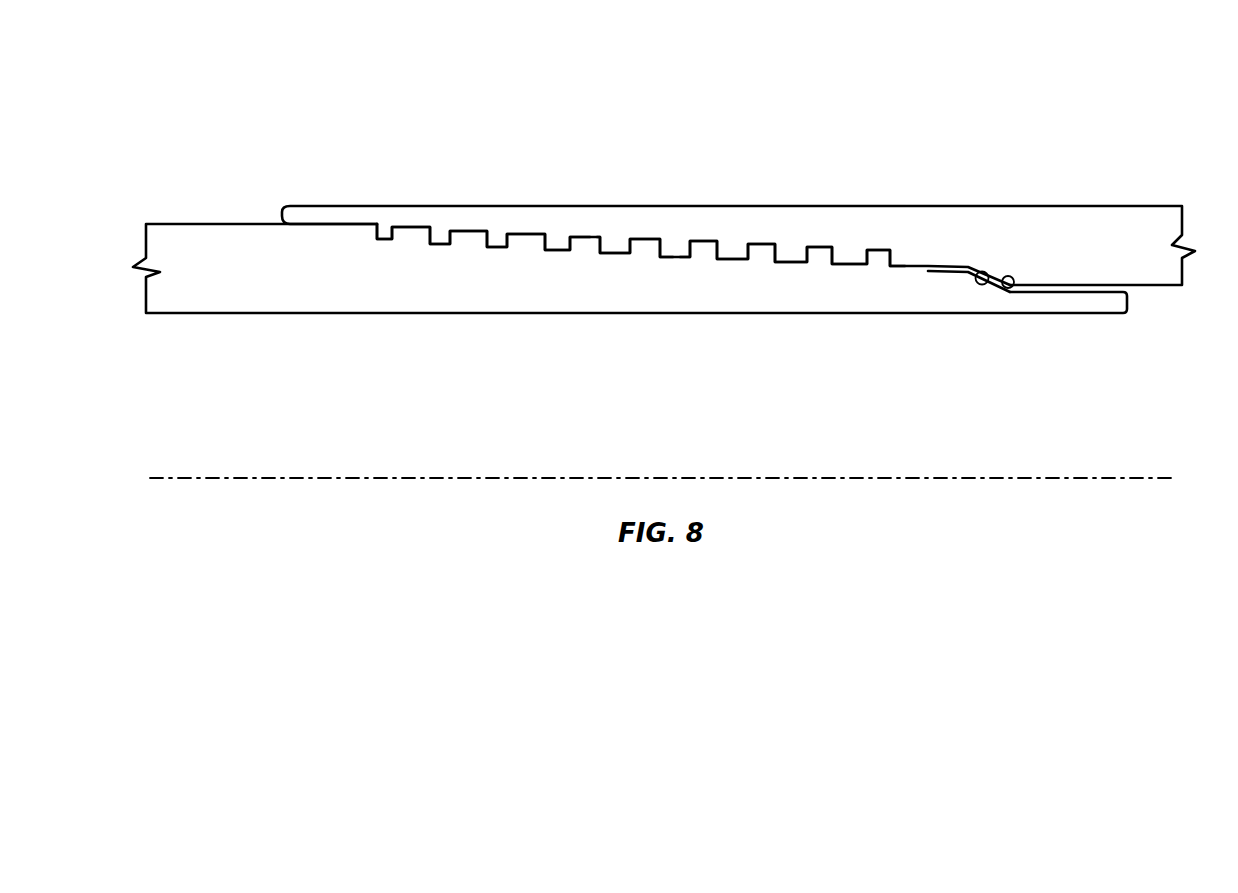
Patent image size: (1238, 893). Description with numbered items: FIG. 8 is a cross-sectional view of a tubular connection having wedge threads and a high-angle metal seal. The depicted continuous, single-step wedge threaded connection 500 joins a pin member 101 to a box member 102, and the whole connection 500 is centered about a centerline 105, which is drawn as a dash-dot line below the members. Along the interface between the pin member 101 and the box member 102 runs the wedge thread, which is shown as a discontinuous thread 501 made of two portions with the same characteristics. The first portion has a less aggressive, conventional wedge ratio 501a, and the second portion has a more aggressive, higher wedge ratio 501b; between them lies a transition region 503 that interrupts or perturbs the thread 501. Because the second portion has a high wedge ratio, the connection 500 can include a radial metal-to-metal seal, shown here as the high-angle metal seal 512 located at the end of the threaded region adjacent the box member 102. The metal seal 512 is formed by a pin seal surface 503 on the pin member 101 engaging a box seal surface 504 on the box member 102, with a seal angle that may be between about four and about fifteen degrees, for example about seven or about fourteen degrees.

The wedge threaded connection 500 is at (962, 110).
The discontinuous thread 501 is at (848, 105).
The first portion having a less aggressive wedge ratio 501a is at (590, 182).
The second portion having a more aggressive wedge ratio 501b is at (907, 182).
The transition region 503 is at (673, 182).
The box seal surface 504 is at (988, 272).
The high-angle metal seal 512 is at (1055, 262).
The pin member 101 is at (268, 280).
The box member 102 is at (1143, 259).
The centerline 105 is at (1013, 478).